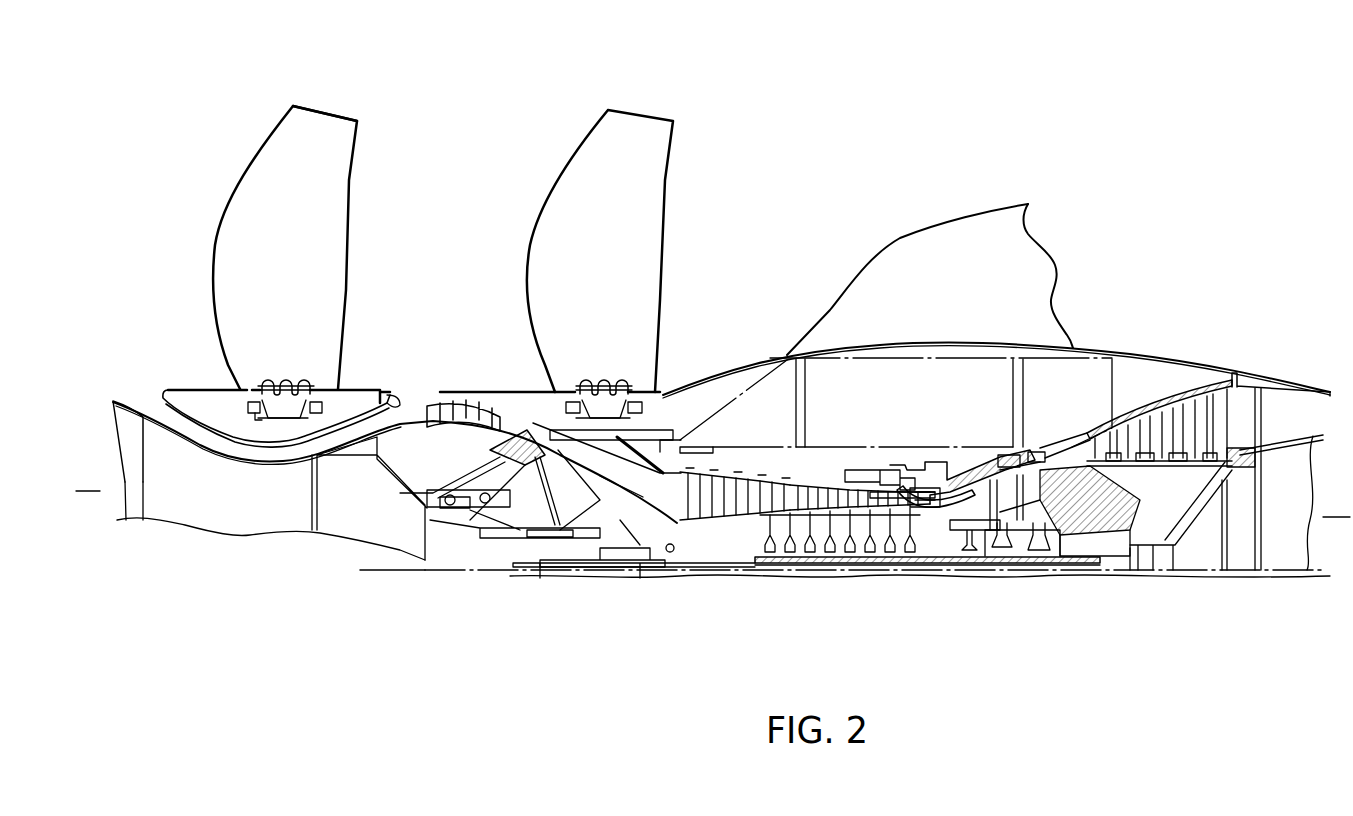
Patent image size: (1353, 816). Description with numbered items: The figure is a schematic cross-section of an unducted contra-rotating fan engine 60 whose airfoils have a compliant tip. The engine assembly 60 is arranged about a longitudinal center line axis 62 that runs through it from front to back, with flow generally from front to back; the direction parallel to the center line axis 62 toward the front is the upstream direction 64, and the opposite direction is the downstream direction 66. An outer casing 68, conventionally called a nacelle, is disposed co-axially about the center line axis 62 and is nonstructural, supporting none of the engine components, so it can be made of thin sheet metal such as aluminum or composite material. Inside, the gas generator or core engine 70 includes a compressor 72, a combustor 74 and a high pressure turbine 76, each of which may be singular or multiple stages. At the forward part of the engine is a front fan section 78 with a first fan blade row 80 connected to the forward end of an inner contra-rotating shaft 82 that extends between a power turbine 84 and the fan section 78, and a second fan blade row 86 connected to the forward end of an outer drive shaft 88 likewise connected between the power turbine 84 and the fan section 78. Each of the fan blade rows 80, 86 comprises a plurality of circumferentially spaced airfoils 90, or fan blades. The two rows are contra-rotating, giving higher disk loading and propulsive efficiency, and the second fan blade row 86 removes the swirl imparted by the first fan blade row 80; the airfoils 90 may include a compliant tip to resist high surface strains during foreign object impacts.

The unducted contra-rotating fan engine 60 is at (1090, 280).
The longitudinal center line axis 62 is at (360, 570).
The upstream direction 64 is at (88, 478).
The downstream direction 66 is at (1329, 503).
The outer casing 68 is at (953, 343).
The core engine 70 is at (818, 470).
The compressor 72 is at (752, 470).
The combustor 74 is at (955, 478).
The high pressure turbine 76 is at (1000, 485).
The front fan section 78 is at (405, 348).
The first fan blade row 80 is at (340, 192).
The inner contra-rotating shaft 82 is at (758, 572).
The power turbine 84 is at (1188, 380).
The second fan blade row 86 is at (552, 188).
The outer drive shaft 88 is at (787, 566).
The airfoils 90 is at (330, 115).